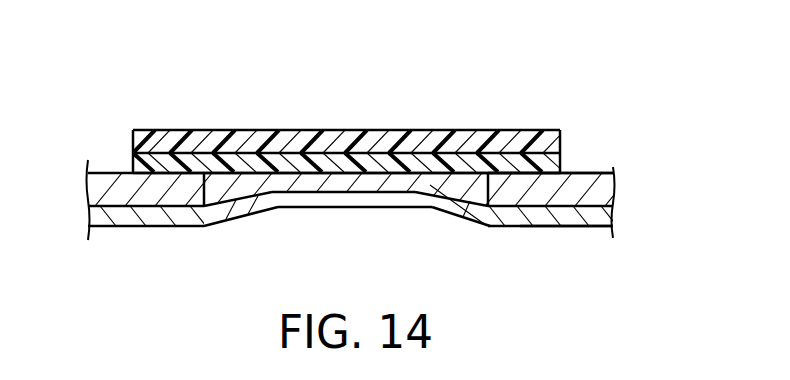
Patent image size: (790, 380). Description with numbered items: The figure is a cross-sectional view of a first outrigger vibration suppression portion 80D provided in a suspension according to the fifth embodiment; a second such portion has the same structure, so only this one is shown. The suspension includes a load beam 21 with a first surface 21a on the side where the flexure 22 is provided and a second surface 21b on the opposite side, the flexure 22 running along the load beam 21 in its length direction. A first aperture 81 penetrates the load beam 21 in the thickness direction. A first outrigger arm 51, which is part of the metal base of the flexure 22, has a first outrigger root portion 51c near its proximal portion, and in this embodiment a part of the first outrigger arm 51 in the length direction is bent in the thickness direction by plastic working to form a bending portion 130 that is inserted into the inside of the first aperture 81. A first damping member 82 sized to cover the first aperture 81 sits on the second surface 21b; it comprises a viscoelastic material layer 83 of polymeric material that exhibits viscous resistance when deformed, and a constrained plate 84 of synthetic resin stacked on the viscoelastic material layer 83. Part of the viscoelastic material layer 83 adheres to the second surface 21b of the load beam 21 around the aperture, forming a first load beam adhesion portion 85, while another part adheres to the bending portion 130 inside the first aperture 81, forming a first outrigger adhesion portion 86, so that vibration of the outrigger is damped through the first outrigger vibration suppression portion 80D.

The first outrigger vibration suppression portion 80D is at (543, 97).
The constrained plate 84 is at (219, 130).
The viscoelastic material layer 83 is at (321, 163).
The first damping member 82 is at (377, 160).
The first outrigger root portion 51c is at (427, 173).
The load beam 21 is at (610, 190).
The first surface 21a is at (577, 227).
The second surface 21b is at (595, 173).
The flexure 22 is at (612, 220).
The first load beam adhesion portion 85 is at (161, 177).
The first aperture 81 is at (206, 182).
The bending portion 130 is at (313, 192).
The first outrigger adhesion portion 86 is at (378, 207).
The first outrigger arm 51 is at (488, 226).